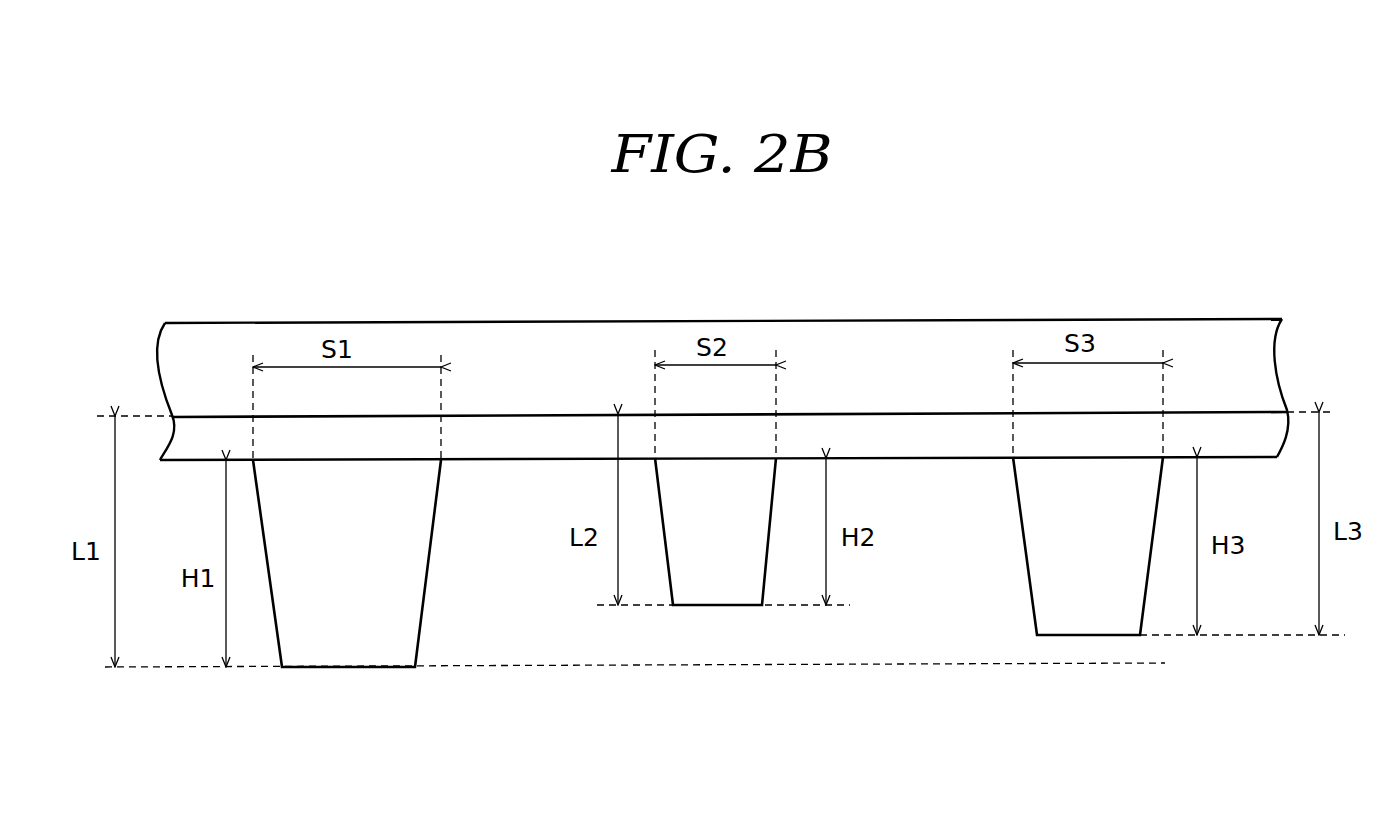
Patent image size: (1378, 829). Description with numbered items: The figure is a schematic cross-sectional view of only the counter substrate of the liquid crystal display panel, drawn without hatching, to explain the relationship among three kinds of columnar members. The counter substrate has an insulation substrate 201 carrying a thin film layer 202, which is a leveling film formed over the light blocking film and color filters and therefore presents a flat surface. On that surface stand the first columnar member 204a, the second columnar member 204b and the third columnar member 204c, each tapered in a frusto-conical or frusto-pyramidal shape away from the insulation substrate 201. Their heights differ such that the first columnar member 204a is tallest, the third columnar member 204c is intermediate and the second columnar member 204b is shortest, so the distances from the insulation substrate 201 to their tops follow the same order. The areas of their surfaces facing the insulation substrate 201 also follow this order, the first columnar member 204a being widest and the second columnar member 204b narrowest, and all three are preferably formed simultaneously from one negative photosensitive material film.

The insulation substrate 201 is at (876, 362).
The thin film layer 202 is at (523, 425).
The first columnar member 204a is at (350, 620).
The second columnar member 204b is at (713, 567).
The third columnar member 204c is at (1077, 598).